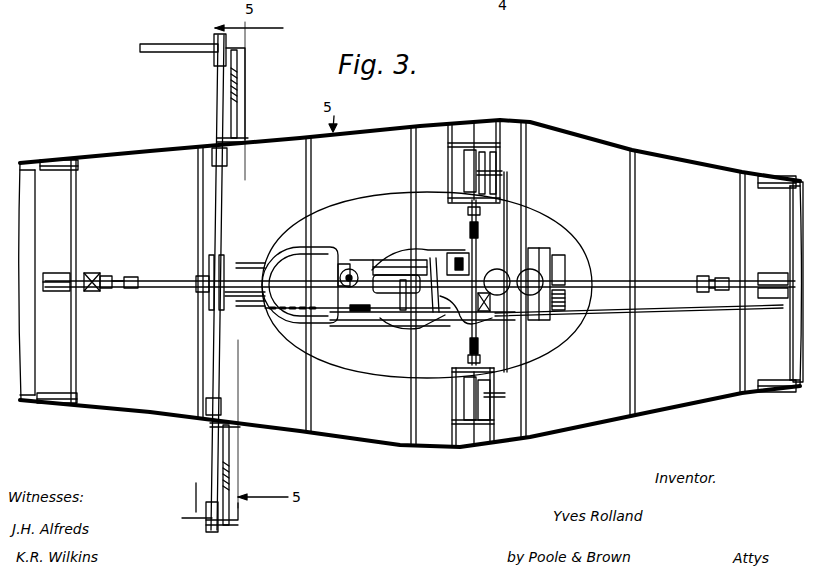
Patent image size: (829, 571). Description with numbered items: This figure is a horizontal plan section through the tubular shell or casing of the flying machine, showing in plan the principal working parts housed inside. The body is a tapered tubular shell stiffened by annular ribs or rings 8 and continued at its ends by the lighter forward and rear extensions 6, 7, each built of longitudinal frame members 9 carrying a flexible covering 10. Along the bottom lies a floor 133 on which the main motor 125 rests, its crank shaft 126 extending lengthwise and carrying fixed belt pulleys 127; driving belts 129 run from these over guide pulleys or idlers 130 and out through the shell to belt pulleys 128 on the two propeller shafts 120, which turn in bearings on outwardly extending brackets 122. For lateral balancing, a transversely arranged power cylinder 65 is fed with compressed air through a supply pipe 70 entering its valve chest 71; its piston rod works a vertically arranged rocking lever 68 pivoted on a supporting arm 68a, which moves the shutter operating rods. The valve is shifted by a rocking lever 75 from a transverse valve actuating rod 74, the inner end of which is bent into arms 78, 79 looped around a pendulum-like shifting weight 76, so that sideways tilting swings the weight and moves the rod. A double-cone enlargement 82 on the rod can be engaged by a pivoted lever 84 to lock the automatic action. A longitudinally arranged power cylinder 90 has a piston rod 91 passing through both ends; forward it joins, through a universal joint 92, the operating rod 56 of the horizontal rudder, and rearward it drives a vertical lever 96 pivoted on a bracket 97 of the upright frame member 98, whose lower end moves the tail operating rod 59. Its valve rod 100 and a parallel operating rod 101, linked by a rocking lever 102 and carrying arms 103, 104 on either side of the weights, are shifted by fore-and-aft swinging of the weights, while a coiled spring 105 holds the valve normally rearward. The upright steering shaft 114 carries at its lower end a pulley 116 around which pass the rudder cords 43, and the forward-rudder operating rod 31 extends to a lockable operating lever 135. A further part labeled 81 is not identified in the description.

The forward extension 6 is at (797, 176).
The rear extension 7 is at (24, 165).
The annular stiffening ribs 8 is at (84, 184).
The longitudinal frame members 9 is at (30, 172).
The covering 10 is at (798, 349).
The operating rod 31 is at (769, 309).
The cords or wires 43 is at (245, 262).
The operating rod 56 is at (752, 280).
The operating rod 59 is at (63, 292).
The power cylinder 65 is at (490, 140).
The rocking lever 68 is at (480, 224).
The supporting arm 68a is at (468, 211).
The supply pipe 70 is at (505, 172).
The valve chest 71 is at (464, 165).
The valve actuating rod 74 is at (486, 175).
The rocking lever 75 is at (473, 140).
The shifting weight 76 is at (469, 262).
The transversely extending arm 78 is at (446, 252).
The transversely extending arm 79 is at (530, 252).
The shaft sleeve 81 is at (300, 327).
The enlargement 82 is at (480, 236).
The lever 84 is at (385, 252).
The power cylinder 90 is at (430, 258).
The piston rod 91 is at (232, 296).
The universal joint 92 is at (709, 277).
The lever 96 is at (130, 289).
The bracket 97 is at (104, 276).
The upright frame member 98 is at (89, 292).
The valve rod 100 is at (437, 320).
The operating rod 101 is at (422, 260).
The rocking lever 102 is at (374, 262).
The arm 103 is at (440, 330).
The arm 104 is at (498, 266).
The spring 105 is at (366, 318).
The upright shaft 114 is at (338, 272).
The wheel or pulley 116 is at (340, 278).
The propeller shafts 120 is at (163, 43).
The brackets 122 is at (238, 52).
The main motor 125 is at (566, 262).
The crank shaft 126 is at (214, 312).
The belt pulleys 127 is at (209, 266).
The belt pulleys 128 is at (214, 60).
The driving belts 129 is at (218, 98).
The guide pulleys 130 is at (228, 160).
The floor 133 is at (375, 200).
The operating lever 135 is at (352, 314).